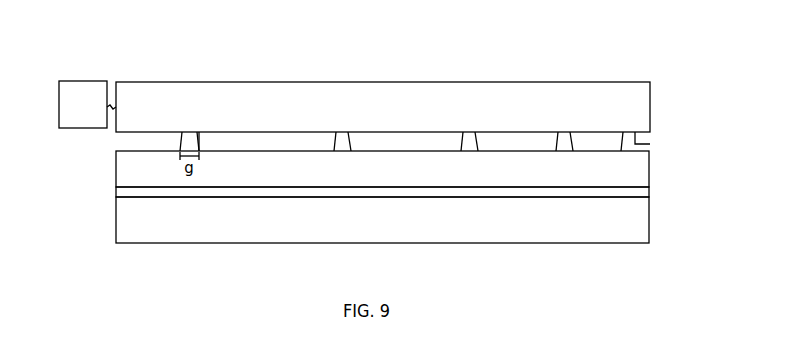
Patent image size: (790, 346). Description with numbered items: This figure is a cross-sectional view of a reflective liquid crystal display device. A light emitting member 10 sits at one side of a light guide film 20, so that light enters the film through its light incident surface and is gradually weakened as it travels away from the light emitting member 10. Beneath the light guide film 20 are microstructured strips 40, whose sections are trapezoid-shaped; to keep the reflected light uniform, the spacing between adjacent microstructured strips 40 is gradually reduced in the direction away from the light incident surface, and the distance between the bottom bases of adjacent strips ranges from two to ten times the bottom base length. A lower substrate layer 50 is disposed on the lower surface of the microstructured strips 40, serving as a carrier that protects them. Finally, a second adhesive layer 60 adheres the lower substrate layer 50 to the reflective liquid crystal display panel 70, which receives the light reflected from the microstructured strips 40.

The light emitting member 10 is at (80, 76).
The light guide film 20 is at (407, 95).
The microstructured strips 40 is at (448, 136).
The lower substrate layer 50 is at (407, 169).
The second adhesive layer 60 is at (407, 203).
The reflective liquid crystal display panel 70 is at (407, 228).